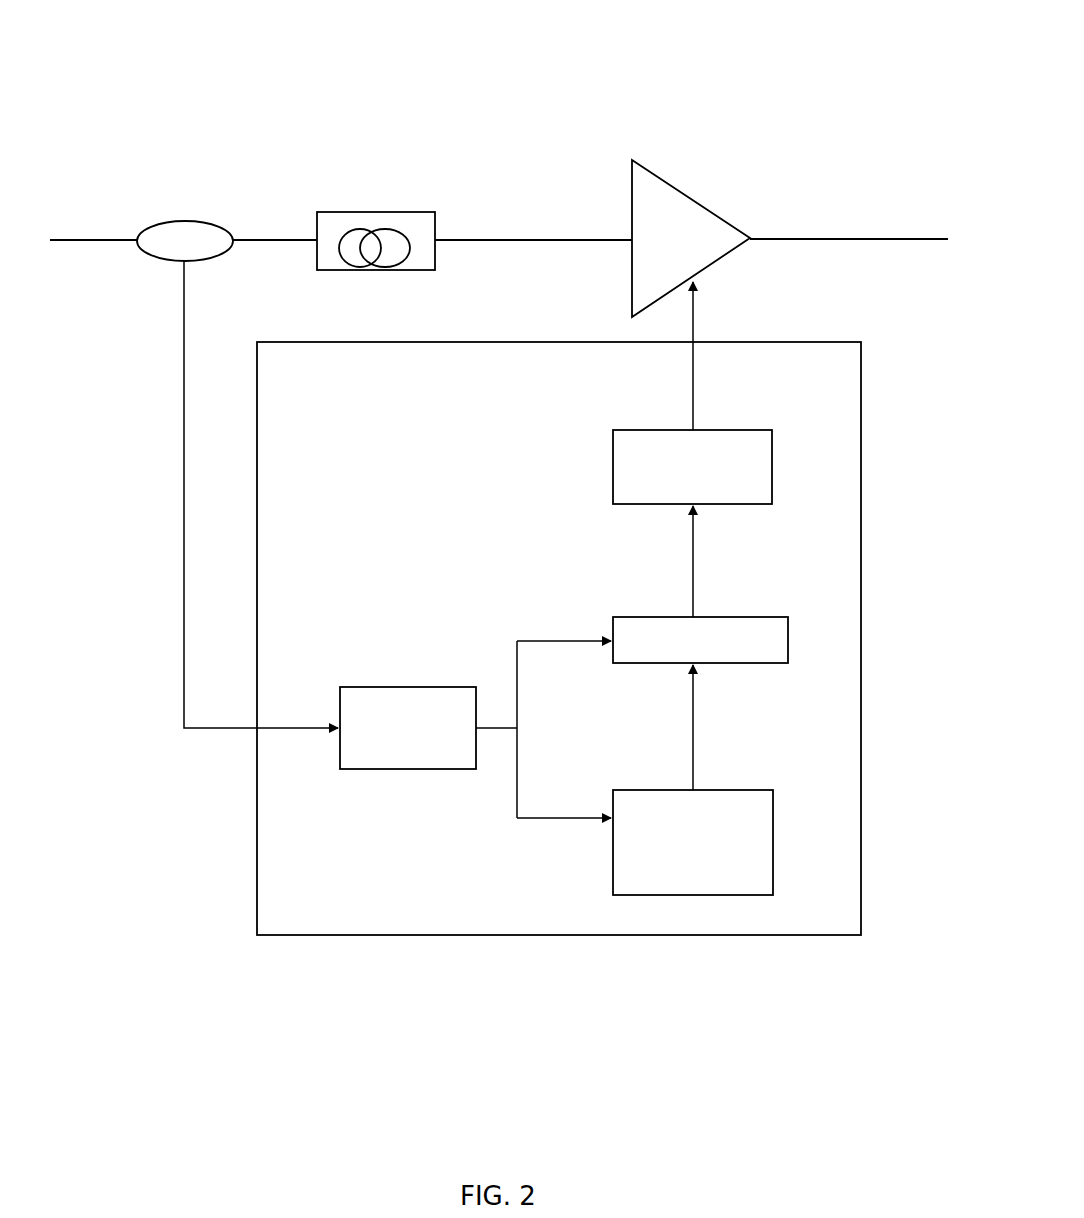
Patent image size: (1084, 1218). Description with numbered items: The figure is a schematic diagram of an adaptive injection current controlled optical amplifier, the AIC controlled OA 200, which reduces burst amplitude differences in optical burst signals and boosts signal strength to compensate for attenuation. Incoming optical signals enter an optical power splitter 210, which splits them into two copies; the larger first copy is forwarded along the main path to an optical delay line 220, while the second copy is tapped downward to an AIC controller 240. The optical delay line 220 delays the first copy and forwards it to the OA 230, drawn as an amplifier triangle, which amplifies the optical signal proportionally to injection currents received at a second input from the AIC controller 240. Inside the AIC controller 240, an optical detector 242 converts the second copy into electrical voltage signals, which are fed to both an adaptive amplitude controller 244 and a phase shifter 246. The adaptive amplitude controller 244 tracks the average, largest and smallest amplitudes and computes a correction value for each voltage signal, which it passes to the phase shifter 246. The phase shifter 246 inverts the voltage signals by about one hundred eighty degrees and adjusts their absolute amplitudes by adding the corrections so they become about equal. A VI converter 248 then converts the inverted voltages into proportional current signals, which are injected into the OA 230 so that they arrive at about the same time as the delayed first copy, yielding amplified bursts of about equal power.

The AIC controlled OA 200 is at (208, 72).
The optical power splitter 210 is at (157, 222).
The optical delay line 220 is at (347, 210).
The OA 230 is at (652, 172).
The AIC controller 240 is at (480, 342).
The optical detector 242 is at (375, 687).
The adaptive amplitude controller 244 is at (647, 788).
The phase shifter 246 is at (647, 615).
The VI converter 248 is at (647, 429).